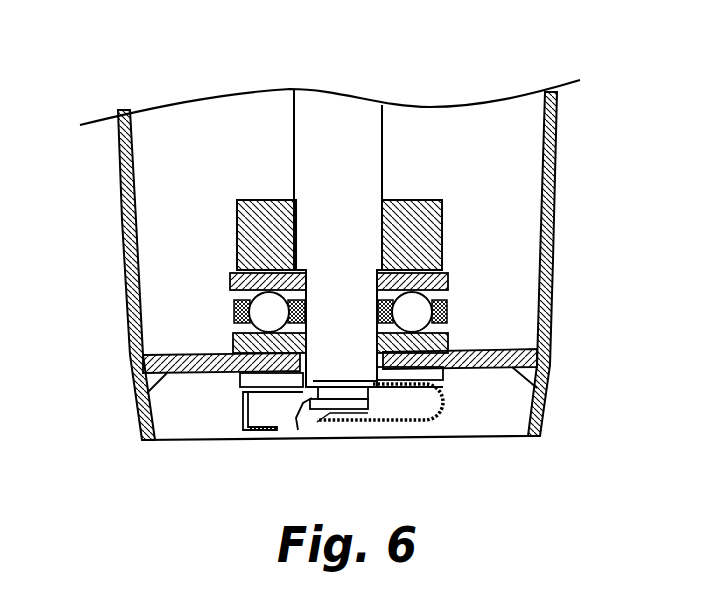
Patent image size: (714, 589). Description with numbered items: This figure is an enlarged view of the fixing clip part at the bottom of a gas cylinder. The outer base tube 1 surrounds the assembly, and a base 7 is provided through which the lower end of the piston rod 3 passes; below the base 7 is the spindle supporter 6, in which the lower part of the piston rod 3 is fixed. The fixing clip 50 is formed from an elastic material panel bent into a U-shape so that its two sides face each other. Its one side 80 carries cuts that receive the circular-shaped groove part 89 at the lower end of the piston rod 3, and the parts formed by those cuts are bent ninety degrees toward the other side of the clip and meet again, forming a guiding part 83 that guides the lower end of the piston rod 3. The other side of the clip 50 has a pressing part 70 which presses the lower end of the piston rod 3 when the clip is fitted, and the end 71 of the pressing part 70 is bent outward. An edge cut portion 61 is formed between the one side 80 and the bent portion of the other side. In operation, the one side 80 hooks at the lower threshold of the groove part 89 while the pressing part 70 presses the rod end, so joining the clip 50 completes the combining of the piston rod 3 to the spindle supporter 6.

The base tube 1 is at (122, 236).
The piston rod 3 is at (338, 118).
The spindle supporter 6 is at (143, 358).
The base 7 is at (450, 310).
The fixing clip 50 is at (450, 417).
The edge cut portion 61 is at (298, 430).
The pressing part 70 is at (365, 420).
The end of the pressing part 71 is at (330, 418).
The one side 80 is at (327, 390).
The guiding part 83 is at (243, 407).
The circular-shaped groove part 89 is at (383, 390).